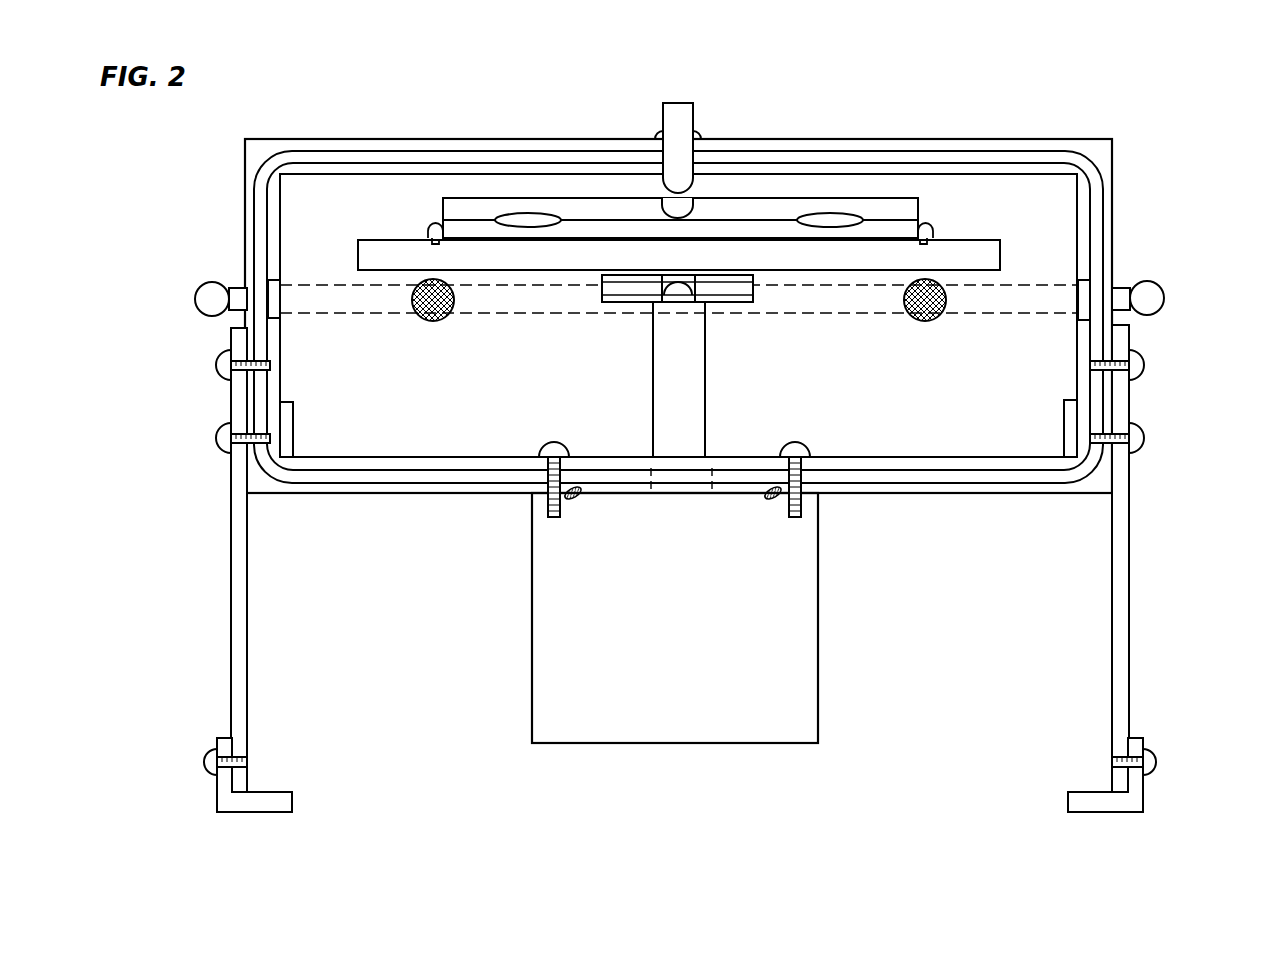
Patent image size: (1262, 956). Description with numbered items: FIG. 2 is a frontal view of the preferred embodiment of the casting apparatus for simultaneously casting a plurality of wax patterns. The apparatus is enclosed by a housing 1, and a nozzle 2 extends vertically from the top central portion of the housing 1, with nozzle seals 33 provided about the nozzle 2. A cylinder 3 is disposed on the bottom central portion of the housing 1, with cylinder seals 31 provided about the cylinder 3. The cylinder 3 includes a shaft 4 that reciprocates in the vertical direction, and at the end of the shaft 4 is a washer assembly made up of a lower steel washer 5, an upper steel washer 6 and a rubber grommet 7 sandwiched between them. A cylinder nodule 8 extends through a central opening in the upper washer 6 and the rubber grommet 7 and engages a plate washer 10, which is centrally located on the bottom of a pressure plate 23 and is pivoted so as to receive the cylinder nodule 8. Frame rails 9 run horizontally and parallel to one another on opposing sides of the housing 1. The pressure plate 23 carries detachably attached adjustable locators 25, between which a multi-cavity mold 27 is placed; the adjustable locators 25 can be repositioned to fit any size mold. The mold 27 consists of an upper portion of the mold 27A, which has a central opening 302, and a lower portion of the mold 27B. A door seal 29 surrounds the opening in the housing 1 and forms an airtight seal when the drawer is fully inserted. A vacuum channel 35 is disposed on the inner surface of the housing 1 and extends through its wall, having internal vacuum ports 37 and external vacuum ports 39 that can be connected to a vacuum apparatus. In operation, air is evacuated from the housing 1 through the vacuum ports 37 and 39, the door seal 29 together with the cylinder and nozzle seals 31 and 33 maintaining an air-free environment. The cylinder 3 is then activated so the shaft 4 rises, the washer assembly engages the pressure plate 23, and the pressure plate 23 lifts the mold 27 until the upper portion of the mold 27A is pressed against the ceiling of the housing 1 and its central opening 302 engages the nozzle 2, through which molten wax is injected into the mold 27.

The housing 1 is at (975, 139).
The nozzle 2 is at (668, 103).
The cylinder 3 is at (818, 610).
The shaft 4 is at (705, 403).
The lower steel washer 5 is at (727, 303).
The upper steel washer 6 is at (608, 290).
The rubber grommet 7 is at (752, 292).
The cylinder nodule 8 is at (672, 292).
The frame rails 9 is at (294, 434).
The plate washer 10 is at (684, 314).
The pressure plate 23 is at (985, 240).
The adjustable locators 25 is at (428, 226).
The multi-cavity mold 27 is at (620, 164).
The upper portion of the mold 27A is at (443, 204).
The lower portion of the mold 27B is at (443, 219).
The door seal 29 is at (1102, 205).
The cylinder seals 31 is at (575, 505).
The nozzle seals 33 is at (657, 134).
The vacuum channel 35 is at (510, 314).
The internal vacuum ports 37 is at (433, 322).
The external vacuum ports 39 is at (198, 299).
The central opening 302 is at (687, 198).